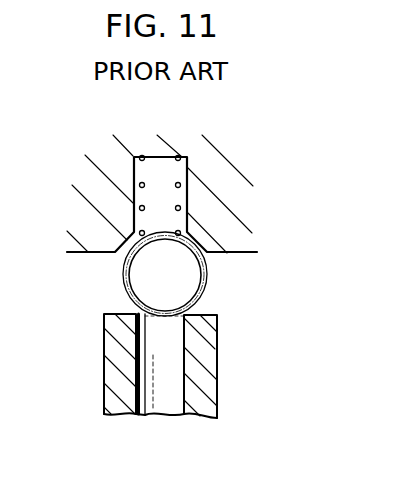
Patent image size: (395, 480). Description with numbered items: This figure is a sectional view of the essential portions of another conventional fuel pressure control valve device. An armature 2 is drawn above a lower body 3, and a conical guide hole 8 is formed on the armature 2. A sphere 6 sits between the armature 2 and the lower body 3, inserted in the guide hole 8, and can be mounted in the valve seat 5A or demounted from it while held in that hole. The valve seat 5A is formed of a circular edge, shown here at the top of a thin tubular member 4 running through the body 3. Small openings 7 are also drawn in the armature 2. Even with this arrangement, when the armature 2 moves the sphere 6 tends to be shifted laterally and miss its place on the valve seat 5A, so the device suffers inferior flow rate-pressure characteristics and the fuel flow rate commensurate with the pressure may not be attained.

The armature 2 is at (242, 247).
The base 3 is at (217, 371).
The sleeve 4 is at (143, 416).
The valve seat 5A is at (136, 318).
The sphere 6 is at (131, 281).
The holes 7 is at (182, 184).
The conical guide hole 8 is at (190, 242).